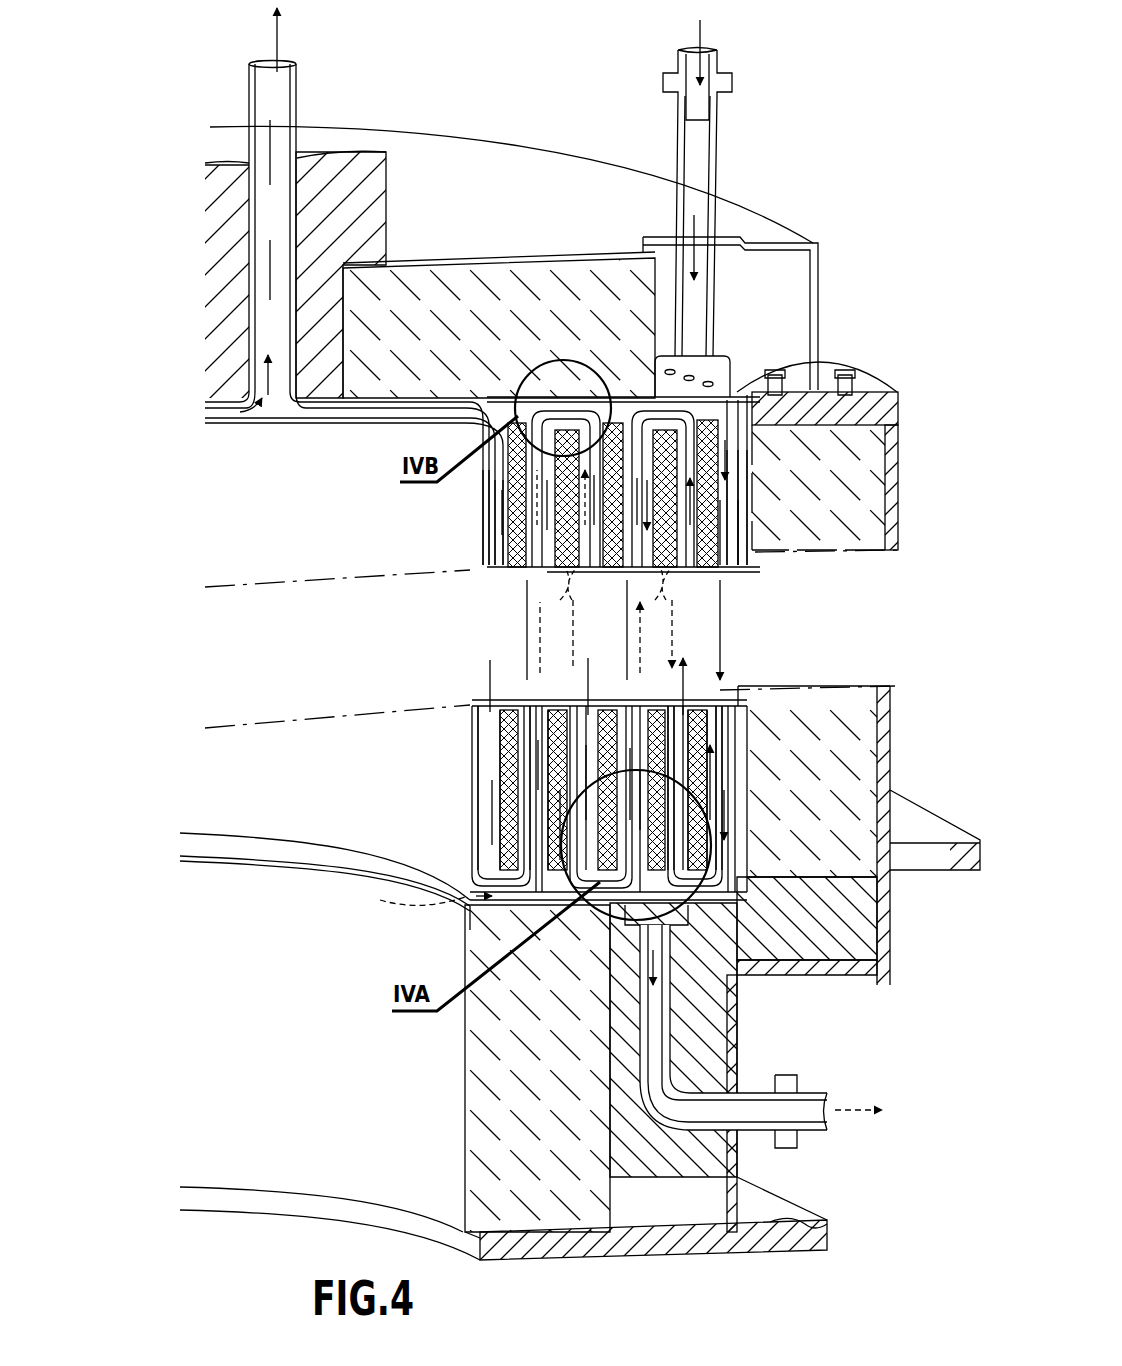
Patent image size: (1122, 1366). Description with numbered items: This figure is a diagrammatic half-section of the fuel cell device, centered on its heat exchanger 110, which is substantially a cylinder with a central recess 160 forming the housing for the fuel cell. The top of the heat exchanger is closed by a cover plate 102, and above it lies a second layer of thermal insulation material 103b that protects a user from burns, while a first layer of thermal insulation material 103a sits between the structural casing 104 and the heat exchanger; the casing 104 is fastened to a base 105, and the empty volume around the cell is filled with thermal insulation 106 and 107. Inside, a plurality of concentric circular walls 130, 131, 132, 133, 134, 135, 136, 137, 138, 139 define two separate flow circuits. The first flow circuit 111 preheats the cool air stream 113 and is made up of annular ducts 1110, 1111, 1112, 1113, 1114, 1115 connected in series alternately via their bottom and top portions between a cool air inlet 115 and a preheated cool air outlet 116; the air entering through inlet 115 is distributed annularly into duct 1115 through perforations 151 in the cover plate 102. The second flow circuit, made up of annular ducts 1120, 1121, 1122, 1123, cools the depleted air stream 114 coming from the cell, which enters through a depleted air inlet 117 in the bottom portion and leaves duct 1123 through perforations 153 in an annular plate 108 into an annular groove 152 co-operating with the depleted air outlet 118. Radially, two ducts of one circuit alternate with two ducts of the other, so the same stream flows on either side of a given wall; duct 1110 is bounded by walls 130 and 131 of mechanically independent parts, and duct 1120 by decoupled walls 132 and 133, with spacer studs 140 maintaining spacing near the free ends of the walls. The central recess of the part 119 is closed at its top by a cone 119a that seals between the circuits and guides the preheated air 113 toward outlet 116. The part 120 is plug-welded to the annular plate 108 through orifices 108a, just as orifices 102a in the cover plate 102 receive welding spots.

The cover plate 102 is at (306, 382).
The orifices 102a is at (562, 396).
The first layer of thermal insulation material 103a is at (866, 508).
The second layer of thermal insulation material 103b is at (527, 322).
The structural casing 104 is at (899, 448).
The base 105 is at (737, 1038).
The thermal insulation 106 is at (663, 1178).
The thermal insulation 107 is at (553, 1207).
The annular plate 108 is at (278, 848).
The orifices 108a is at (582, 905).
The heat exchanger 110 is at (804, 608).
The first flow circuit 111 is at (480, 700).
The cool air stream 113 is at (283, 32).
The depleted air stream 114 is at (840, 1105).
The cool air inlet 115 is at (716, 128).
The preheated cool air outlet 116 is at (298, 86).
The depleted air inlet 117 is at (487, 902).
The depleted air outlet 118 is at (778, 1140).
The part 119 is at (776, 363).
The cone 119a is at (260, 404).
The part 120 is at (503, 418).
The circular wall 130 is at (483, 499).
The circular wall 131 is at (483, 523).
The circular wall 132 is at (510, 848).
The circular wall 133 is at (547, 782).
The circular wall 134 is at (587, 740).
The circular wall 135 is at (718, 854).
The circular wall 136 is at (718, 826).
The circular wall 137 is at (718, 798).
The circular wall 138 is at (720, 715).
The circular wall 139 is at (684, 717).
The spacer studs 140 is at (742, 553).
The perforations 151 is at (692, 345).
The annular groove 152 is at (702, 388).
The perforations 153 is at (722, 893).
The central recess 160 is at (286, 786).
The annular duct 1110 is at (490, 563).
The annular duct 1111 is at (523, 576).
The annular duct 1112 is at (714, 530).
The annular duct 1113 is at (714, 495).
The annular duct 1114 is at (728, 452).
The annular duct 1115 is at (723, 562).
The annular duct 1120 is at (533, 818).
The annular duct 1121 is at (497, 728).
The annular duct 1122 is at (716, 740).
The annular duct 1123 is at (718, 768).